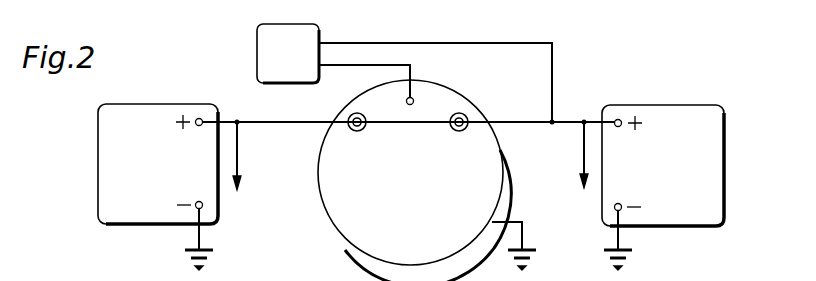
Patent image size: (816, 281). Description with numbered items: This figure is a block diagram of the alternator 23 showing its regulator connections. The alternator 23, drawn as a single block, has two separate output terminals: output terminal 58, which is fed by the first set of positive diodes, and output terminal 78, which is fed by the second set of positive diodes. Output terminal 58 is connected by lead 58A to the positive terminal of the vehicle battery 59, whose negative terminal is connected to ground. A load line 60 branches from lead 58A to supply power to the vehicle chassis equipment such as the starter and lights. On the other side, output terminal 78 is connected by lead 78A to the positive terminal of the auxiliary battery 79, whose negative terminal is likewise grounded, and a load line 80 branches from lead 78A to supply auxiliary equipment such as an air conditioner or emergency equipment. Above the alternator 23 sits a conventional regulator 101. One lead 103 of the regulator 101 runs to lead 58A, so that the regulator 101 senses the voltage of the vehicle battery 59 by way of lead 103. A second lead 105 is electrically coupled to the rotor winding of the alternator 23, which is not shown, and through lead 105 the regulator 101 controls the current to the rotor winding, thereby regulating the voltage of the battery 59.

The regulator 101 is at (257, 36).
The lead 103 is at (544, 41).
The lead 105 is at (412, 70).
The auxiliary battery 79 is at (144, 104).
The vehicle battery 59 is at (658, 105).
The alternator 23 is at (333, 225).
The output terminal 78 is at (357, 122).
The output terminal 58 is at (459, 131).
The lead 78A is at (317, 121).
The lead 58A is at (531, 121).
The load line 80 is at (238, 150).
The load line 60 is at (584, 160).